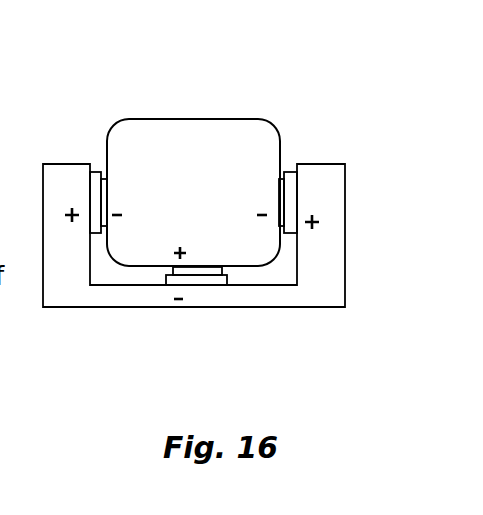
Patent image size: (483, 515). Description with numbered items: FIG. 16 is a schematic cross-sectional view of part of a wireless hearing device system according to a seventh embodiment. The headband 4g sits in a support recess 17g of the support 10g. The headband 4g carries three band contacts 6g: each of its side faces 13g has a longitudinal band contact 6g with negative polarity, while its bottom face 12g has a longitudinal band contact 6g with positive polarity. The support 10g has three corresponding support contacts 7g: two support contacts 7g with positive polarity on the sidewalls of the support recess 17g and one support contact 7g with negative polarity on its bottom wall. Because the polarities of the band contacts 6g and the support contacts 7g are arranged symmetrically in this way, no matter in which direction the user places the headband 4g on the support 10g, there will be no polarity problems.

The headband 4g is at (150, 140).
The band contact 6g is at (196, 267).
The support contact 7g is at (92, 198).
The support 10g is at (323, 266).
The bottom face 12g is at (148, 267).
The side face 13g is at (105, 157).
The support recess 17g is at (110, 284).